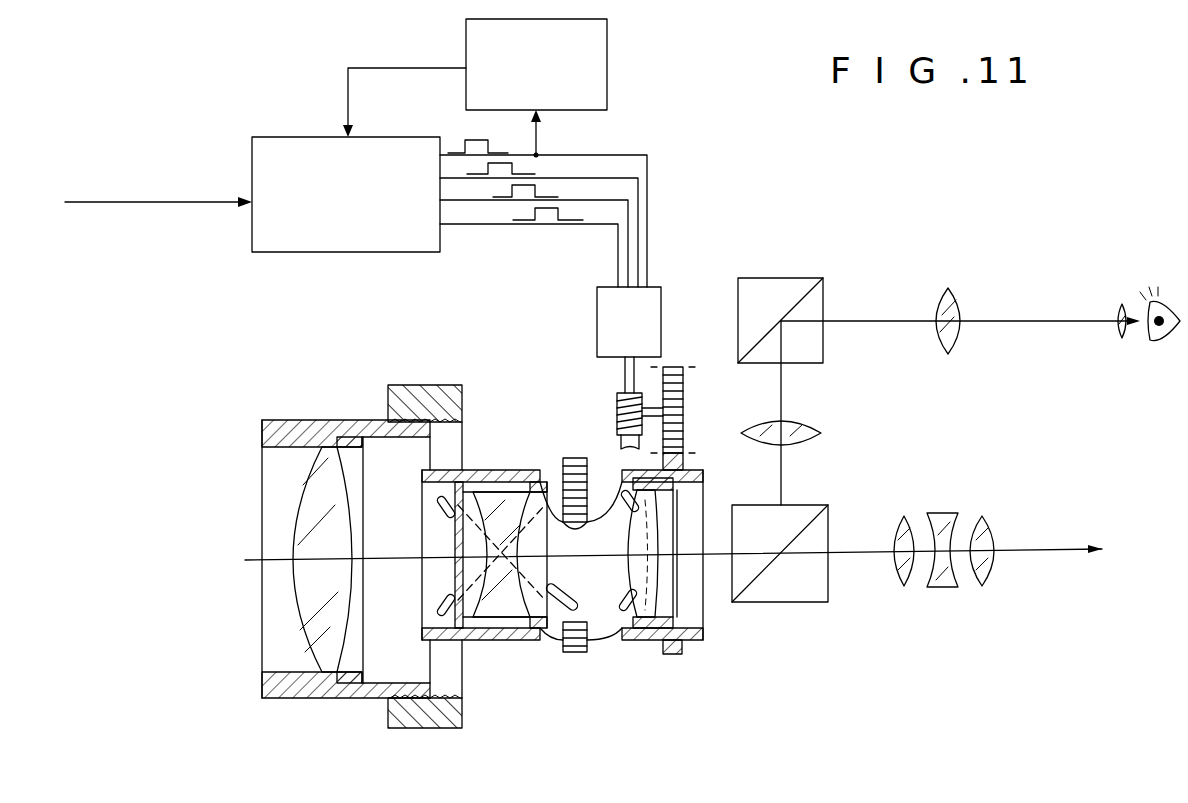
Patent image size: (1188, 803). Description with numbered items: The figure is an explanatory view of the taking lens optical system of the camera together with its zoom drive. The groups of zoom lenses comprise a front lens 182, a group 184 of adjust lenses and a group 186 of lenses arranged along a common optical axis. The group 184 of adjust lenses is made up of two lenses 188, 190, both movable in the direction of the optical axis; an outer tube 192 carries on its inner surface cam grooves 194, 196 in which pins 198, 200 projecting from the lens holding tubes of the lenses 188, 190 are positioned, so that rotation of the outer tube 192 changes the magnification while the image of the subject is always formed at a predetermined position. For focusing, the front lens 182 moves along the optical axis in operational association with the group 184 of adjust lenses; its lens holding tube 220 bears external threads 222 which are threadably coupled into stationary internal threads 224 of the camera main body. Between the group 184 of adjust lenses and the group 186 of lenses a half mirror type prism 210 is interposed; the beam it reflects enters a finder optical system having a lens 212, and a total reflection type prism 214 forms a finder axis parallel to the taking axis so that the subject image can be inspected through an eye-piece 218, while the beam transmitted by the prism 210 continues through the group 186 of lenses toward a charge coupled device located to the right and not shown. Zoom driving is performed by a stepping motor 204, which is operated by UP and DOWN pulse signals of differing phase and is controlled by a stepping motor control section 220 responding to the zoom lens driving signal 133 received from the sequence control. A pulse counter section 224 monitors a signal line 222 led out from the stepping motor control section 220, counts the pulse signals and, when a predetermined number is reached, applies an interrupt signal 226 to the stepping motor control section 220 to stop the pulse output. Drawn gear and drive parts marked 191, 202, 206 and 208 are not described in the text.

The zoom lens driving signal 133 is at (137, 200).
The front lens 182 is at (302, 593).
The group of adjust lenses 184 is at (493, 470).
The group of lenses 186 is at (940, 515).
The lens 188 is at (508, 642).
The lens 190 is at (642, 653).
The gear 191 is at (525, 470).
The outer tube 192 is at (608, 653).
The cam groove 194 is at (565, 597).
The cam groove 196 is at (630, 607).
The pin 198 is at (440, 553).
The pin 200 is at (581, 561).
The stopper 202 is at (675, 656).
The stepping motor 204 is at (662, 290).
The worm 206 is at (617, 405).
The worm gear 208 is at (684, 398).
The half mirror type prism 210 is at (818, 503).
The lens 212 is at (808, 425).
The total reflection type prism 214 is at (805, 275).
The eye-piece 218 is at (1114, 303).
The stepping motor control section 220 is at (295, 137).
The signal line 222 is at (630, 162).
The pulse counter section 224 is at (609, 42).
The interrupt signal 226 is at (388, 65).